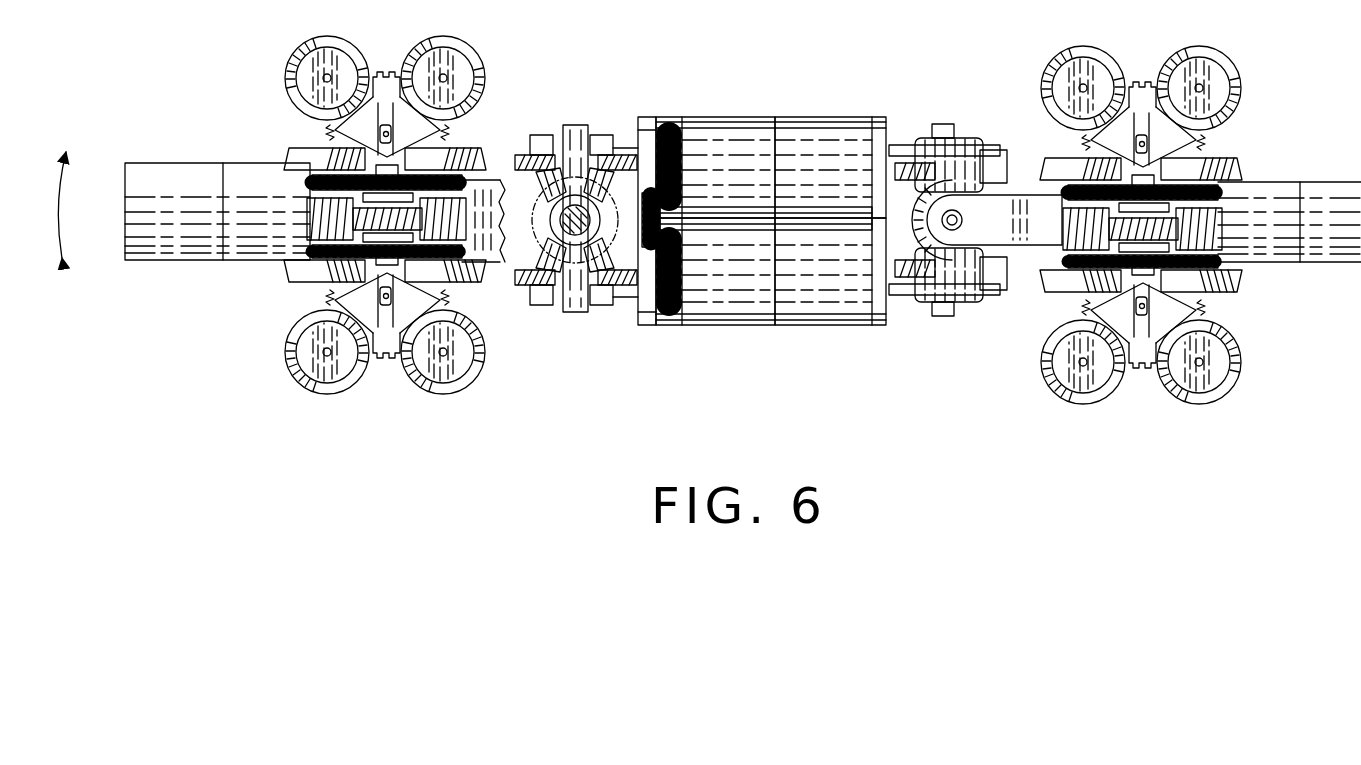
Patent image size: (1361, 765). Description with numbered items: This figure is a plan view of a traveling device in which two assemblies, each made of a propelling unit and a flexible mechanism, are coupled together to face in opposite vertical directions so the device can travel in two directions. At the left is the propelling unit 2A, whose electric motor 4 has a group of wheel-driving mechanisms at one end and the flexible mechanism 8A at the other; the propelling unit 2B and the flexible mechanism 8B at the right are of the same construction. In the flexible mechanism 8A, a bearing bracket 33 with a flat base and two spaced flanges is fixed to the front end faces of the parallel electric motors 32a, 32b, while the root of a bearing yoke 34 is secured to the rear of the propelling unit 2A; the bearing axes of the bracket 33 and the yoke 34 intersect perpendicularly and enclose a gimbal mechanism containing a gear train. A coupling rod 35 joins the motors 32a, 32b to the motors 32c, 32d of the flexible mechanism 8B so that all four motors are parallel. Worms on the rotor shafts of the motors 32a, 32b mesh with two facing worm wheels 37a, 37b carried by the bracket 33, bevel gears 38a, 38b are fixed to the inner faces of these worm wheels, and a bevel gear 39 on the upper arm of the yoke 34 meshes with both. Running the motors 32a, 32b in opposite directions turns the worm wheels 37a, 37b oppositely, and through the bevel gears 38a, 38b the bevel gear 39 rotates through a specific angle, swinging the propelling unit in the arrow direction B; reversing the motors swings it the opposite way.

The arrow direction B is at (71, 205).
The electric motor 4 is at (182, 172).
The propelling unit 2A is at (390, 380).
The propelling unit 2B is at (1142, 390).
The flexible mechanism 8A is at (562, 254).
The flexible mechanism 8B is at (953, 352).
The electric motor 32a is at (668, 125).
The electric motor 32b is at (668, 325).
The electric motor 32c is at (750, 125).
The electric motor 32d is at (757, 312).
The bearing bracket 33 is at (638, 318).
The bearing yoke 34 is at (497, 272).
The coupling rod 35 is at (822, 224).
The worm wheel 37a is at (612, 153).
The worm wheel 37b is at (520, 286).
The bevel gear 38a is at (536, 170).
The bevel gear 38b is at (600, 302).
The bevel gear 39 is at (505, 174).